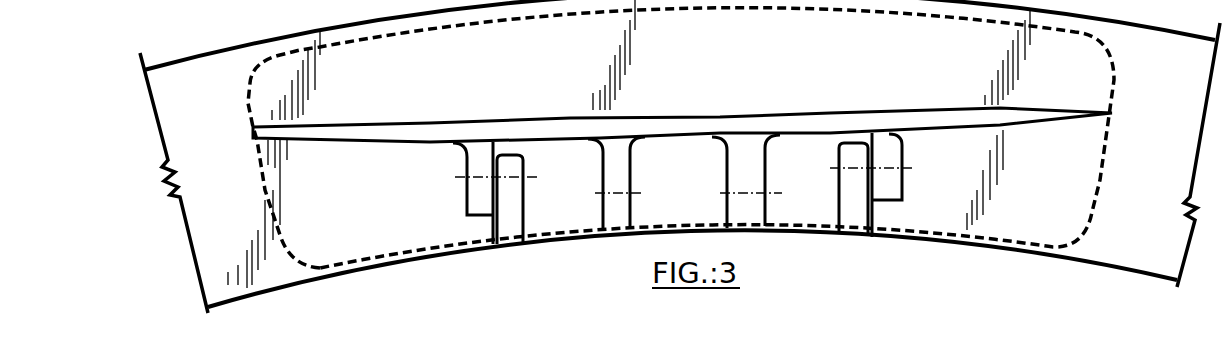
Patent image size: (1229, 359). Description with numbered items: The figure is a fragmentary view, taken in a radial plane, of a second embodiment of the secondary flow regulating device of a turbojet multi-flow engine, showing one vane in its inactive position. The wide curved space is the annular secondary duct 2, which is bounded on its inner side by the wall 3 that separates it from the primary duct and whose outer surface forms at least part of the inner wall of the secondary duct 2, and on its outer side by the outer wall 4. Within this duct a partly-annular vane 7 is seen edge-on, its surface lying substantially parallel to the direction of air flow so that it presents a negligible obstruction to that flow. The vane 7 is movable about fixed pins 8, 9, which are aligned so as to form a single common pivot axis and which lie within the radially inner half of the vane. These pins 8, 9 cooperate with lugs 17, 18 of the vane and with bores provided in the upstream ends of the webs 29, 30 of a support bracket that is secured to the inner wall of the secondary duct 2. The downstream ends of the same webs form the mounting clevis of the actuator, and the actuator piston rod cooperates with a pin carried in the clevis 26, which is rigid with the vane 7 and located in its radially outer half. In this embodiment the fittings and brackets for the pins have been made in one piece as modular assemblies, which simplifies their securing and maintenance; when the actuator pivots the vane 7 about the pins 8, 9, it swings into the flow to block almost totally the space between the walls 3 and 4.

The secondary duct 2 is at (680, 156).
The wall 3 is at (524, 242).
The outer wall 4 is at (207, 53).
The partly-annular vane 7 is at (677, 132).
The fixed pin 8 is at (857, 165).
The fixed pin 9 is at (460, 178).
The lug 17 is at (893, 190).
The lug 18 is at (480, 205).
The clevis 26 is at (737, 160).
The web 29 is at (853, 192).
The web 30 is at (508, 215).